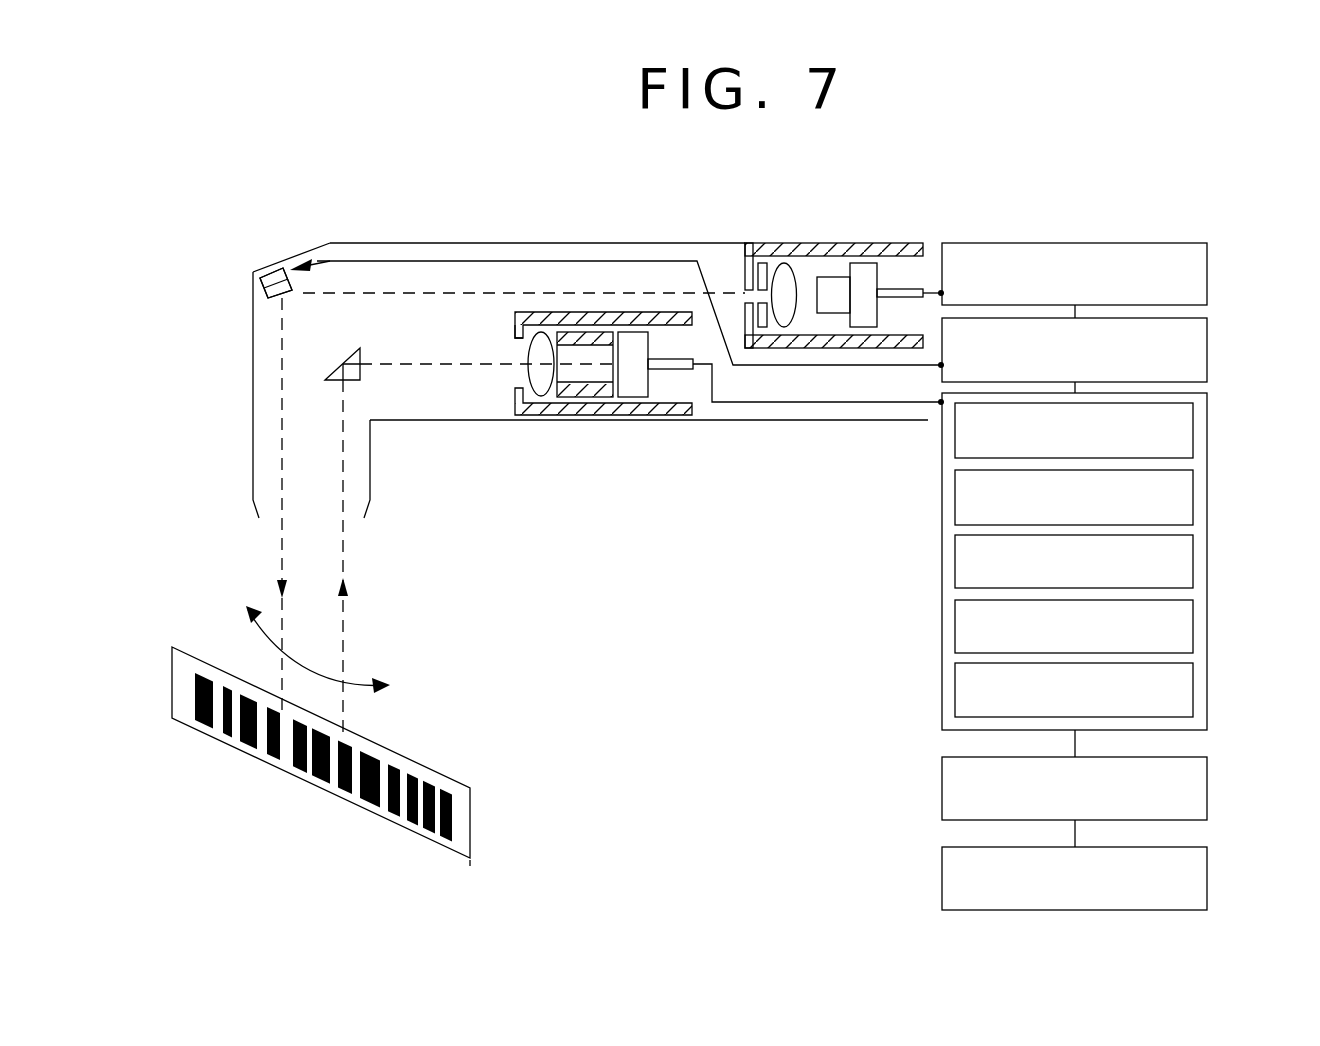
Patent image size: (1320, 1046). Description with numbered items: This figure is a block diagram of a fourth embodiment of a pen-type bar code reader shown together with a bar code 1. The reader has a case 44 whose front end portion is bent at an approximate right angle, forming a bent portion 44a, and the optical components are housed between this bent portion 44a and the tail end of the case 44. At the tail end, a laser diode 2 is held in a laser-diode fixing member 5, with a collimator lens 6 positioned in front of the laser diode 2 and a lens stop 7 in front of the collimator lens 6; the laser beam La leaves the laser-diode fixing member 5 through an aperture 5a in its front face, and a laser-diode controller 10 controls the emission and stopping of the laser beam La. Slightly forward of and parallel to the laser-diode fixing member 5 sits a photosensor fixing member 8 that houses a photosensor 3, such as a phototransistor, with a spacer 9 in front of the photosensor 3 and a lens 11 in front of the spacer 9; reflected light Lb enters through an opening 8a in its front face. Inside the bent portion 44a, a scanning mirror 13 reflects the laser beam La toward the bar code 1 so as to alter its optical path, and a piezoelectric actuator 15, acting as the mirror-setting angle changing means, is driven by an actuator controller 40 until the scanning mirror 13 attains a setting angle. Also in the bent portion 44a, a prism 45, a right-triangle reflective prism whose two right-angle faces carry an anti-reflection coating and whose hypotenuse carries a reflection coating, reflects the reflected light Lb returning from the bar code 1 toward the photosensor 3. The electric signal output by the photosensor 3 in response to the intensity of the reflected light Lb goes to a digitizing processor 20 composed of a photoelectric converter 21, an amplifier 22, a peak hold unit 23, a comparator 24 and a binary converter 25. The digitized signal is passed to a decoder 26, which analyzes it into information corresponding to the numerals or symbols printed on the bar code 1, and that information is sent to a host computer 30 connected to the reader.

The bar code 1 is at (460, 798).
The laser diode 2 is at (832, 276).
The photosensor 3 is at (650, 345).
The laser-diode fixing member 5 is at (878, 248).
The aperture 5a is at (745, 295).
The collimator lens 6 is at (783, 280).
The lens stop 7 is at (762, 270).
The photosensor fixing member 8 is at (660, 406).
The opening 8a is at (514, 336).
The spacer 9 is at (580, 396).
The laser-diode controller 10 is at (1210, 272).
The lens 11 is at (530, 370).
The scanning mirror 13 is at (263, 296).
The piezoelectric actuator 15 is at (258, 283).
The digitizing processor 20 is at (1210, 530).
The photoelectric converter 21 is at (1196, 435).
The amplifier 22 is at (1196, 500).
The peak hold unit 23 is at (1196, 568).
The comparator 24 is at (1196, 628).
The binary converter 25 is at (1196, 690).
The decoder 26 is at (1210, 786).
The host computer 30 is at (1210, 878).
The actuator controller 40 is at (1210, 348).
The case 44 is at (600, 421).
The bent portion 44a is at (289, 262).
The prism 45 is at (360, 350).
The laser beam La is at (432, 292).
The reflected light Lb is at (345, 548).